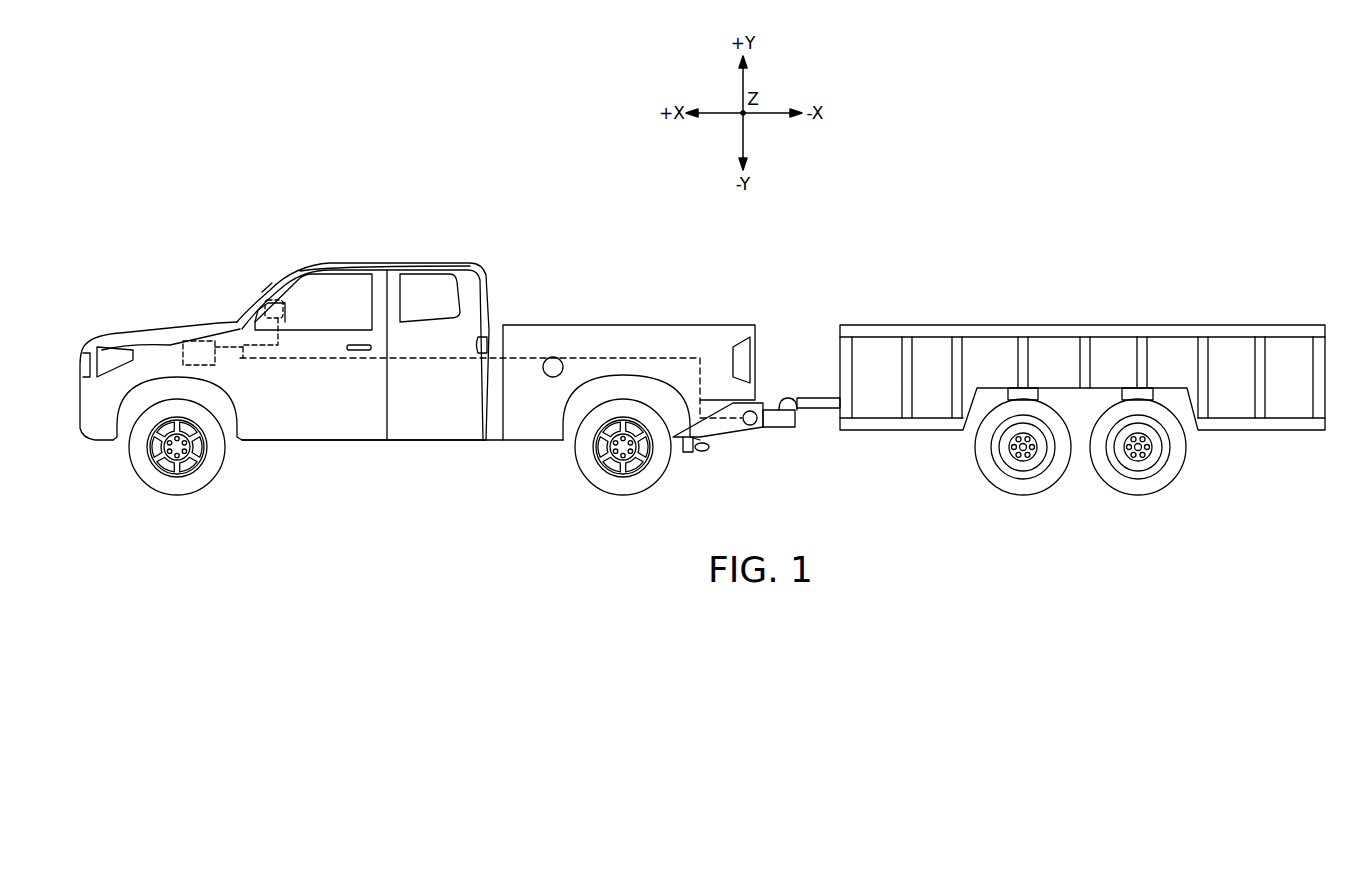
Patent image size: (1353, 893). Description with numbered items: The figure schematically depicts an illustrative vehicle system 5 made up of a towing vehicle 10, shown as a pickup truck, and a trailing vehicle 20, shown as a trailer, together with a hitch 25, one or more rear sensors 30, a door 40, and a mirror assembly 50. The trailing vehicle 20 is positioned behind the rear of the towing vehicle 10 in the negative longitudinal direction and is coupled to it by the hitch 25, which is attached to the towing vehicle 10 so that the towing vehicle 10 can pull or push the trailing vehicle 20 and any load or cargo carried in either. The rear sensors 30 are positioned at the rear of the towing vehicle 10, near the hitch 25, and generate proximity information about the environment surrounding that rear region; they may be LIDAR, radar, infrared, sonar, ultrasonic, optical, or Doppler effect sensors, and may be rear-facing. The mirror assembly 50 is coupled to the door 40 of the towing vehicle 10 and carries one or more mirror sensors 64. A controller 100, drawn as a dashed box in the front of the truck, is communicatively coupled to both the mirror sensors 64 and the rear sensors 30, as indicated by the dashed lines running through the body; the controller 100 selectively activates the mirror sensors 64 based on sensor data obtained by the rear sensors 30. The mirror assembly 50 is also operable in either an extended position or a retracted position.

The vehicle system 5 is at (1092, 121).
The towing vehicle 10 is at (178, 268).
The trailing vehicle 20 is at (960, 280).
The hitch 25 is at (792, 432).
The rear sensors 30 is at (753, 410).
The door 40 is at (350, 264).
The mirror assembly 50 is at (274, 300).
The mirror sensors 64 is at (290, 312).
The controller 100 is at (196, 340).